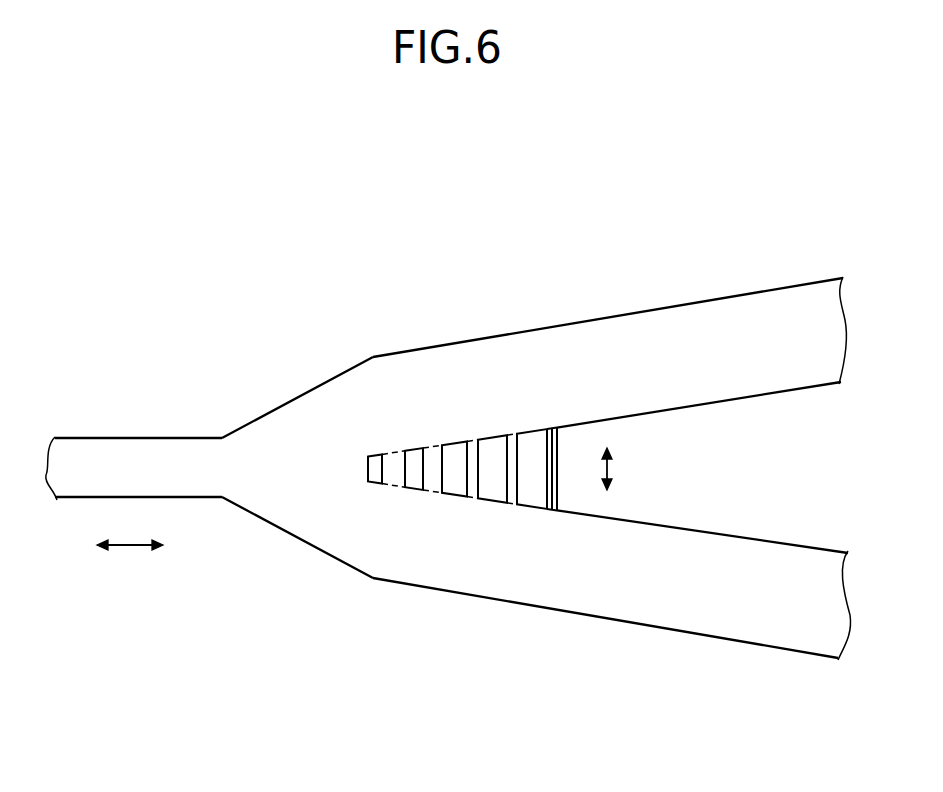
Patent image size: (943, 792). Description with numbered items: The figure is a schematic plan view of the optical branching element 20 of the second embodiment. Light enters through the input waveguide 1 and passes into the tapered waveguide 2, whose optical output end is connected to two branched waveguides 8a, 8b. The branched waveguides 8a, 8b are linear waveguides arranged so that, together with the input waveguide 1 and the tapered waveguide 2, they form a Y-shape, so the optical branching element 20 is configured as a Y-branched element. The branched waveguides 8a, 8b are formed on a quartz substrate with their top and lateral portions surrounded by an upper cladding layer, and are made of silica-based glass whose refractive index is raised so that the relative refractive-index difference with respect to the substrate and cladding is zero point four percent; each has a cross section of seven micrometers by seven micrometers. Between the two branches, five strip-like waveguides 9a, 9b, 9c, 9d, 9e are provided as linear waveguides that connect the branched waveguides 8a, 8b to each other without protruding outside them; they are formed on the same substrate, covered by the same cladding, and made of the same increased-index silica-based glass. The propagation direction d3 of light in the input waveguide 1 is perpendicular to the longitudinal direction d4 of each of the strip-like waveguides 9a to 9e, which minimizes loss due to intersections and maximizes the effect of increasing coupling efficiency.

The input waveguide 1 is at (137, 437).
The tapered waveguide 2 is at (300, 395).
The branched waveguide 8a is at (622, 315).
The branched waveguide 8b is at (520, 603).
The strip-like waveguide 9a is at (406, 471).
The strip-like waveguide 9b is at (444, 471).
The strip-like waveguide 9c is at (481, 471).
The strip-like waveguide 9d is at (520, 471).
The strip-like waveguide 9e is at (557, 472).
The optical branching element 20 is at (650, 192).
The propagation direction of light in the input waveguide d3 is at (135, 548).
The longitudinal direction of the strip-like waveguides d4 is at (612, 470).